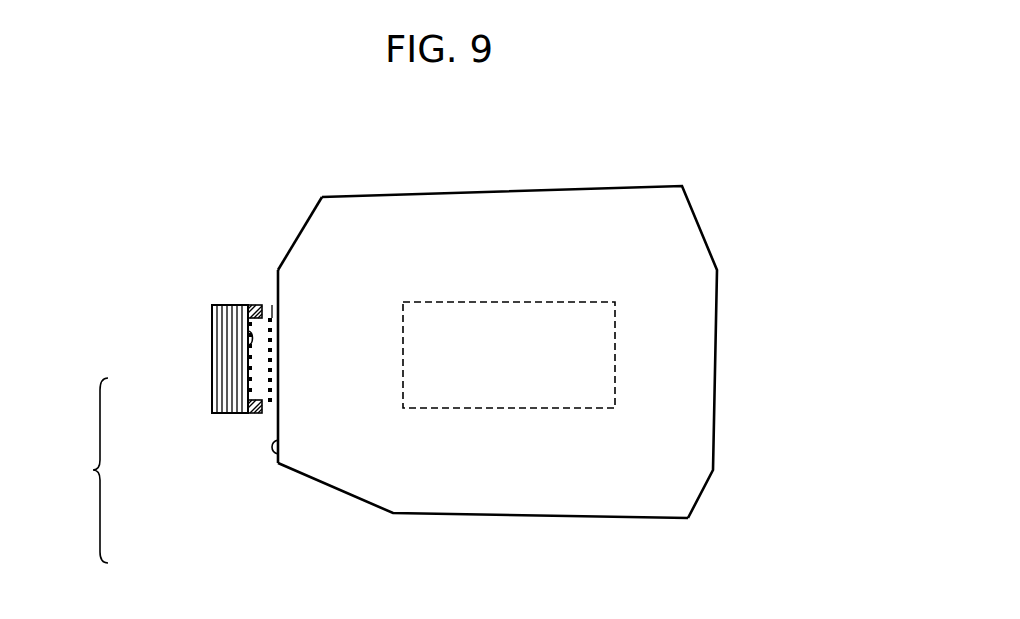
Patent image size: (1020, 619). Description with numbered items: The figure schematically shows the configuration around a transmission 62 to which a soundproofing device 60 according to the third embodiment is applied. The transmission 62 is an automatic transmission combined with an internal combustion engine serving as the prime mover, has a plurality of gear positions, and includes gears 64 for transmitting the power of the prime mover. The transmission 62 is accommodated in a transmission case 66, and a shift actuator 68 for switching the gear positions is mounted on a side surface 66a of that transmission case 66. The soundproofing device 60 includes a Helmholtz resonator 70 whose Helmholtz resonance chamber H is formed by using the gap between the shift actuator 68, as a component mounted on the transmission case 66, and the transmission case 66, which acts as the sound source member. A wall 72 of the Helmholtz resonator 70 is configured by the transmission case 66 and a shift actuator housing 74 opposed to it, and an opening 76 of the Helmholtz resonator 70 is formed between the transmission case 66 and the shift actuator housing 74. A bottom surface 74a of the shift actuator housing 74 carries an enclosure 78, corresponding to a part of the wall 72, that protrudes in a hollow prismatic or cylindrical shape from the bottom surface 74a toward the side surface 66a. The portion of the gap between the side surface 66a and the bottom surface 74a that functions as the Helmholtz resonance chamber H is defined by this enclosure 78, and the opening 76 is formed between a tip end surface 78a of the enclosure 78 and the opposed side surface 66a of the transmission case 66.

The soundproofing device 60 is at (260, 220).
The transmission 62 is at (718, 214).
The gears 64 is at (615, 352).
The transmission case 66 is at (338, 503).
The side surface 66a is at (275, 447).
The shift actuator 68 is at (175, 360).
The Helmholtz resonator 70 is at (256, 264).
The wall 72 is at (84, 470).
The shift actuator housing 74 is at (200, 385).
The bottom surface 74a is at (248, 367).
The opening 76 is at (272, 305).
The enclosure 78 is at (240, 298).
The tip end surface 78a is at (245, 295).
The Helmholtz resonance chamber H is at (245, 338).